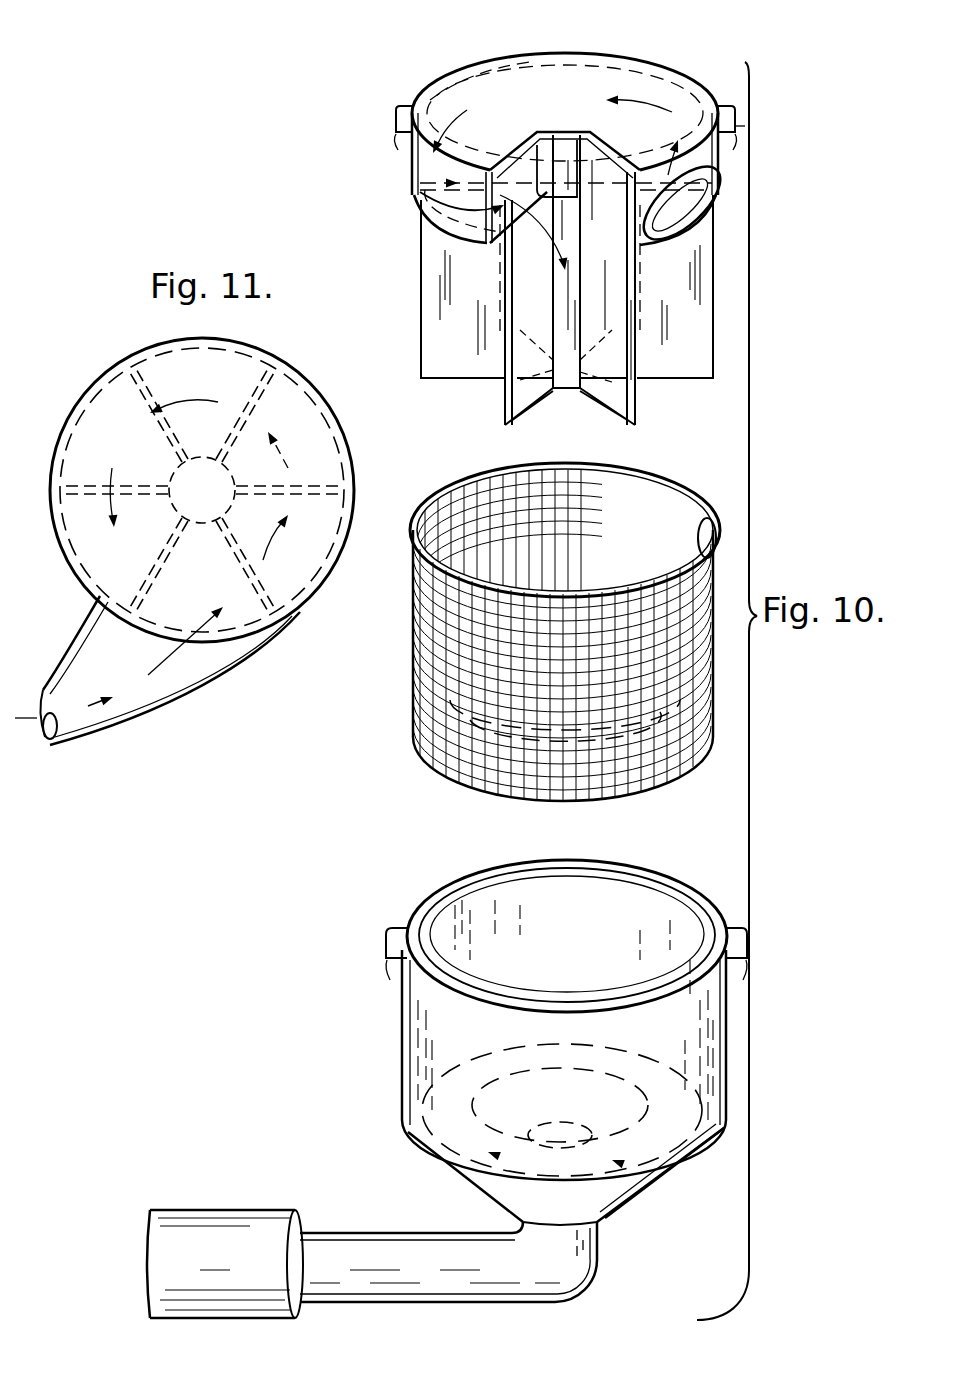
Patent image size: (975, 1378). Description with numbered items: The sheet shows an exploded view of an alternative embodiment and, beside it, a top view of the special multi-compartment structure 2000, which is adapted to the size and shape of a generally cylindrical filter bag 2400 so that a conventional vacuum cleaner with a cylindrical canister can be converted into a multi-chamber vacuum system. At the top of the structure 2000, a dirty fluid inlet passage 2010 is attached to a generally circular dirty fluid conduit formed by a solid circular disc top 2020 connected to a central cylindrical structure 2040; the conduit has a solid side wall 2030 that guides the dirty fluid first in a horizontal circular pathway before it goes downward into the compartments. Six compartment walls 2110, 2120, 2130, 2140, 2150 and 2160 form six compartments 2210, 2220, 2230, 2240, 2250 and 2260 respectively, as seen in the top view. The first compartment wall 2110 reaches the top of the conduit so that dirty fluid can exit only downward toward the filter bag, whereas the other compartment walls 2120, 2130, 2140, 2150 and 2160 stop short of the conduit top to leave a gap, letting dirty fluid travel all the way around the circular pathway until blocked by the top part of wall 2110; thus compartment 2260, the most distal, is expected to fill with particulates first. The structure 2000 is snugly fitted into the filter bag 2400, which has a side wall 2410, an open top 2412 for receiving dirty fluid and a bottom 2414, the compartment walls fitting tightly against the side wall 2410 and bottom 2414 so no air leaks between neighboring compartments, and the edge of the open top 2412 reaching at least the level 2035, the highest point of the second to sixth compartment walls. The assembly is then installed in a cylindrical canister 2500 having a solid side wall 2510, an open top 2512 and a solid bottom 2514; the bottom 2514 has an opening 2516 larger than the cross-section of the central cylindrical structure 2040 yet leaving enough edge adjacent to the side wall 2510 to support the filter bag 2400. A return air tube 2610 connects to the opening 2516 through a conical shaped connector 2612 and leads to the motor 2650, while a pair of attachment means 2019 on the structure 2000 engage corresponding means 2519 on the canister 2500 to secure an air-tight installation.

In FIG. 10, the multi-compartment structure 2000 is at (705, 32).
In FIG. 11, the multi-compartment structure 2000 is at (300, 363).
In FIG. 10, the dirty fluid inlet passage 2010 is at (688, 193).
In FIG. 11, the dirty fluid inlet passage 2010 is at (150, 700).
In FIG. 10, the means for attachment 2019 is at (395, 125).
In FIG. 10, the solid circular disc top 2020 is at (590, 93).
In FIG. 10, the solid side wall 2030 is at (410, 162).
In FIG. 10, the highest point of the second to sixth compartment walls 2035 is at (518, 220).
In FIG. 10, the central cylindrical structure 2040 is at (505, 95).
In FIG. 10, the first compartment wall 2110 is at (615, 390).
In FIG. 10, the second compartment wall 2120 is at (692, 315).
In FIG. 10, the third compartment wall 2130 is at (752, 126).
In FIG. 10, the fourth compartment wall 2140 is at (436, 98).
In FIG. 10, the fifth compartment wall 2150 is at (465, 272).
In FIG. 10, the sixth compartment wall 2160 is at (518, 397).
In FIG. 11, the first compartment 2210 is at (222, 591).
In FIG. 11, the second compartment 2220 is at (313, 588).
In FIG. 11, the third compartment 2230 is at (315, 425).
In FIG. 11, the fourth compartment 2240 is at (224, 389).
In FIG. 11, the fifth compartment 2250 is at (105, 478).
In FIG. 11, the sixth compartment 2260 is at (143, 563).
In FIG. 10, the filter bag 2400 is at (722, 691).
In FIG. 10, the side wall 2410 is at (420, 640).
In FIG. 10, the open top 2412 is at (702, 538).
In FIG. 10, the bottom 2414 is at (508, 732).
In FIG. 10, the cylindrical canister 2500 is at (737, 1040).
In FIG. 10, the solid side wall 2510 is at (402, 987).
In FIG. 10, the open top 2512 is at (650, 903).
In FIG. 10, the solid bottom 2514 is at (380, 1077).
In FIG. 10, the opening 2516 is at (740, 1148).
In FIG. 10, the means for attachment 2519 is at (390, 937).
In FIG. 10, the return air tube 2610 is at (393, 1248).
In FIG. 10, the conical shaped connector 2612 is at (645, 1192).
In FIG. 10, the motor 2650 is at (245, 1256).